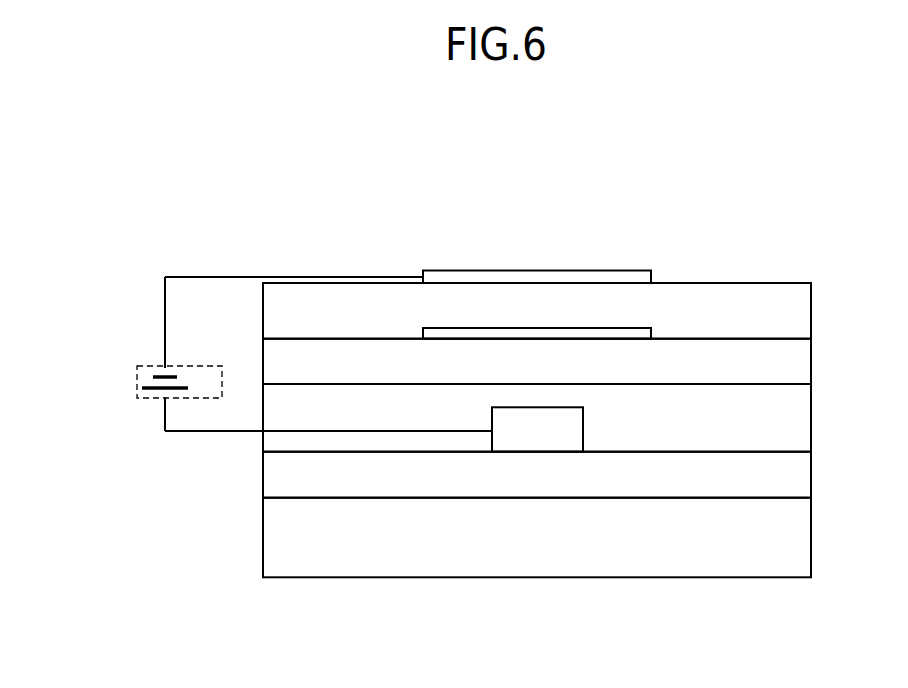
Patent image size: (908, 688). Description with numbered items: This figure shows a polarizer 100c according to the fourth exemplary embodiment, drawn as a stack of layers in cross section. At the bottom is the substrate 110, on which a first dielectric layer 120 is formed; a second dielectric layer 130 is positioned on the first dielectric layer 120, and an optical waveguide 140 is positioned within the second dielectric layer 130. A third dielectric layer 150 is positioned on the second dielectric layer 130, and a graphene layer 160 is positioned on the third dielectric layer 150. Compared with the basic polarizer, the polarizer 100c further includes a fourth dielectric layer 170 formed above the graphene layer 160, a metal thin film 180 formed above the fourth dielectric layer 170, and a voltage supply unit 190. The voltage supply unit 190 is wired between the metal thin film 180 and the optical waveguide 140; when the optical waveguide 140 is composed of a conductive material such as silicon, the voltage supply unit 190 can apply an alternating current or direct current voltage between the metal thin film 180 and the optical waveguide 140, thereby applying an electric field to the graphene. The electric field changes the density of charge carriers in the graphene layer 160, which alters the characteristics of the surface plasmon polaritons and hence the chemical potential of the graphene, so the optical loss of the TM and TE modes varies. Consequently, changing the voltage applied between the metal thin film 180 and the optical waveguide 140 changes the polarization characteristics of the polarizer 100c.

The substrate 110 is at (798, 538).
The first dielectric layer 120 is at (798, 475).
The second dielectric layer 130 is at (798, 425).
The optical waveguide 140 is at (545, 428).
The third dielectric layer 150 is at (798, 366).
The graphene layer 160 is at (445, 332).
The fourth dielectric layer 170 is at (798, 311).
The metal thin film 180 is at (535, 277).
The voltage supply unit 190 is at (136, 379).
The polarizer 100c is at (657, 225).